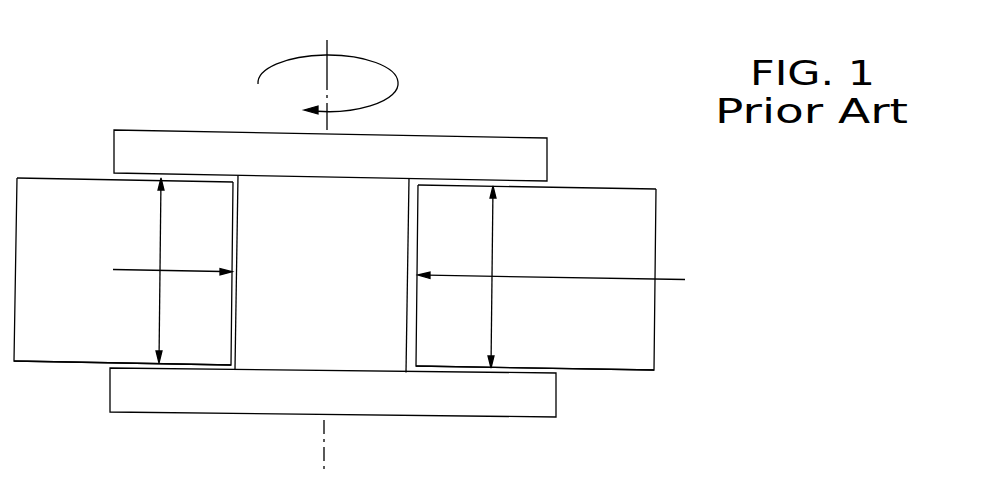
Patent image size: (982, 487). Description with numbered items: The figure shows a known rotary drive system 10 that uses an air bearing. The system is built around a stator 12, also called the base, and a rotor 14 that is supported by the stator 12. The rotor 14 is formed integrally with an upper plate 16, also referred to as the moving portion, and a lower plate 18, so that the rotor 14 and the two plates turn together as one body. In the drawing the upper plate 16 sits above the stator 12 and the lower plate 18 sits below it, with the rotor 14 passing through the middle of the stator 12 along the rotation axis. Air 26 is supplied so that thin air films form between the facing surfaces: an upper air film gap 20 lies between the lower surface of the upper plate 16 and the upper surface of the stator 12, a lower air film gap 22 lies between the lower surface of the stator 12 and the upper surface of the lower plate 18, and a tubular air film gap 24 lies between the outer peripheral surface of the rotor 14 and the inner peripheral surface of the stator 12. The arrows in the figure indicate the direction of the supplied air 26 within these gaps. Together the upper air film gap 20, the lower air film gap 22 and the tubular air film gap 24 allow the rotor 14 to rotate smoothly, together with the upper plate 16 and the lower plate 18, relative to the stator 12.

The rotary drive system 10 is at (558, 72).
The stator 12 is at (655, 318).
The rotor 14 is at (372, 355).
The upper plate 16 is at (141, 133).
The lower plate 18 is at (150, 402).
The upper air film gap 20 is at (160, 176).
The lower air film gap 22 is at (160, 364).
The tubular air film gap 24 is at (232, 272).
The air 26 is at (158, 233).